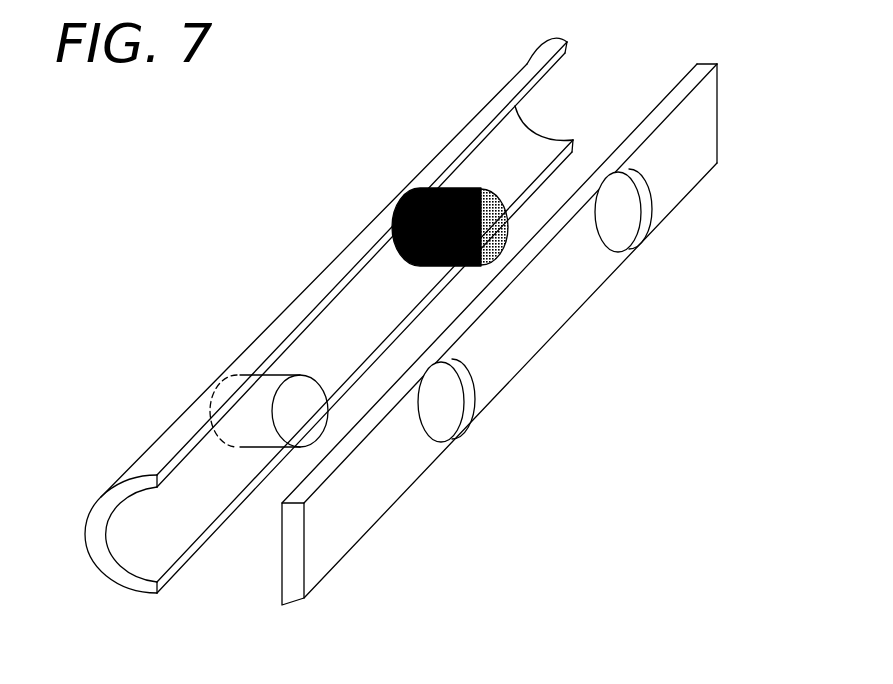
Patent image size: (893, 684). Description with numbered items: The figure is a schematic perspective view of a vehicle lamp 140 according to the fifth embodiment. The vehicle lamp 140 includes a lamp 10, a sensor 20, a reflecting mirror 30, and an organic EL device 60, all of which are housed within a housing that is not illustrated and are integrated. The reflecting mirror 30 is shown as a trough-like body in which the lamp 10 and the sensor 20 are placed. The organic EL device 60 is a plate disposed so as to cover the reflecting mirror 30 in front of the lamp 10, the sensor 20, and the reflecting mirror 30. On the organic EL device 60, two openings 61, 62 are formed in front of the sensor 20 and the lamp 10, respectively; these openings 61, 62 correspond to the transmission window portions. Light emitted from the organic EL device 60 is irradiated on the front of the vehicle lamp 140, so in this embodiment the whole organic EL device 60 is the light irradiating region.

The lamp 10 is at (255, 402).
The sensor 20 is at (413, 198).
The reflecting mirror 30 is at (523, 65).
The organic EL device 60 is at (690, 173).
The opening 61 is at (623, 212).
The opening 62 is at (447, 408).
The vehicle lamp 140 is at (420, 662).